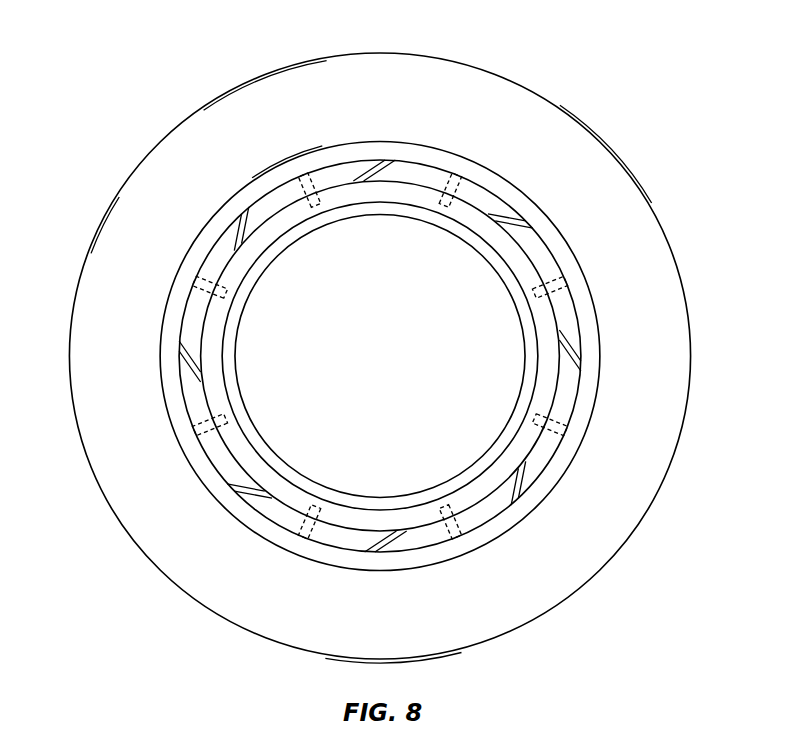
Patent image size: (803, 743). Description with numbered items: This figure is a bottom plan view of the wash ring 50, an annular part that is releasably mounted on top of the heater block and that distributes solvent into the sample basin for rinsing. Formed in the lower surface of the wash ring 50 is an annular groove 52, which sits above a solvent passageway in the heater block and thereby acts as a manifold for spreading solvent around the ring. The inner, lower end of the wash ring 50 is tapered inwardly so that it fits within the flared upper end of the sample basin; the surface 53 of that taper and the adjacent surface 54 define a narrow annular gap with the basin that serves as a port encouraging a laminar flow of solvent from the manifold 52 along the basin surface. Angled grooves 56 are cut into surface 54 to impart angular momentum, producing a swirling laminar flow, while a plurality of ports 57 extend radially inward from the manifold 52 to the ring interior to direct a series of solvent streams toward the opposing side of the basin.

The wash ring 50 is at (552, 123).
The annular groove 52 is at (390, 563).
The surface of taper 53 is at (473, 488).
The adjacent surface 54 is at (477, 518).
The angled grooves 56 is at (179, 356).
The ports 57 is at (443, 193).